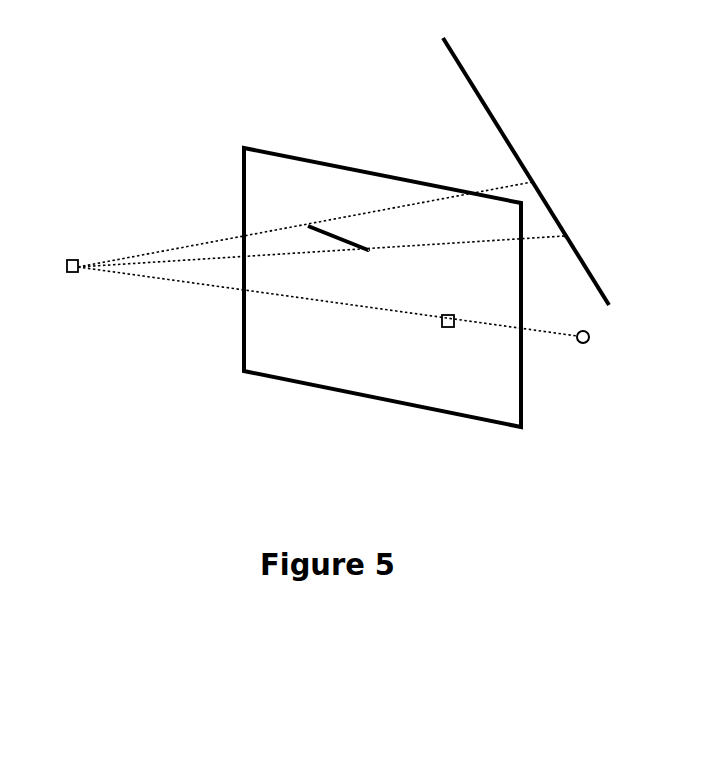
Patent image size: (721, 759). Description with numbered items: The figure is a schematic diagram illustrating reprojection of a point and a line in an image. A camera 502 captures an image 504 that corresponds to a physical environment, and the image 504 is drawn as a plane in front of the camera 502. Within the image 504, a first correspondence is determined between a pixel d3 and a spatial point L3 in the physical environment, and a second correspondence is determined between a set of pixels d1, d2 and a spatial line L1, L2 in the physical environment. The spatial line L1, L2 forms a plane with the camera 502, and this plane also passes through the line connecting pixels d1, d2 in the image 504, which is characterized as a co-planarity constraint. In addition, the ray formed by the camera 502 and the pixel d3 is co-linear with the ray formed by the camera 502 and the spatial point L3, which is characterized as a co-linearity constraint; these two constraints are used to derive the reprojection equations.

The camera 502 is at (82, 262).
The image 504 is at (340, 167).
The first endpoint of spatial line L1 is at (514, 158).
The second endpoint of spatial line L2 is at (589, 284).
The spatial point L3 is at (595, 350).
The first pixel d1 is at (327, 227).
The second pixel d2 is at (372, 262).
The pixel d3 is at (458, 313).